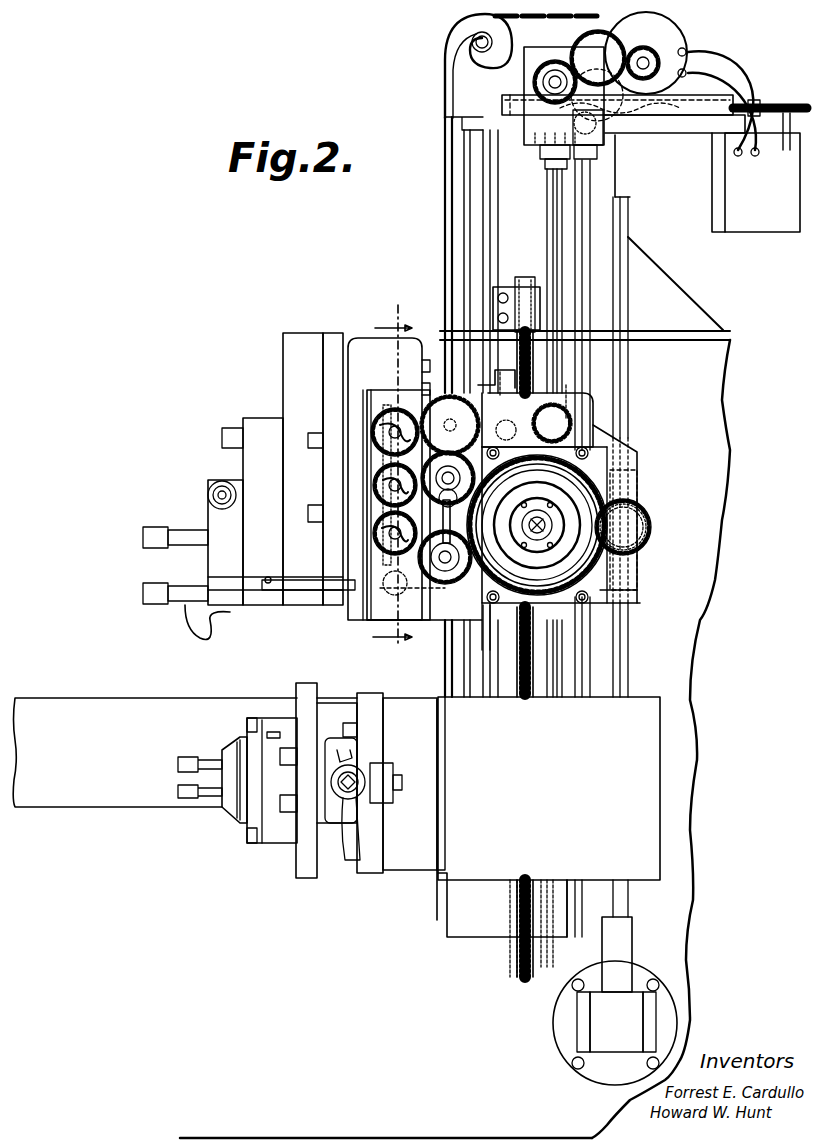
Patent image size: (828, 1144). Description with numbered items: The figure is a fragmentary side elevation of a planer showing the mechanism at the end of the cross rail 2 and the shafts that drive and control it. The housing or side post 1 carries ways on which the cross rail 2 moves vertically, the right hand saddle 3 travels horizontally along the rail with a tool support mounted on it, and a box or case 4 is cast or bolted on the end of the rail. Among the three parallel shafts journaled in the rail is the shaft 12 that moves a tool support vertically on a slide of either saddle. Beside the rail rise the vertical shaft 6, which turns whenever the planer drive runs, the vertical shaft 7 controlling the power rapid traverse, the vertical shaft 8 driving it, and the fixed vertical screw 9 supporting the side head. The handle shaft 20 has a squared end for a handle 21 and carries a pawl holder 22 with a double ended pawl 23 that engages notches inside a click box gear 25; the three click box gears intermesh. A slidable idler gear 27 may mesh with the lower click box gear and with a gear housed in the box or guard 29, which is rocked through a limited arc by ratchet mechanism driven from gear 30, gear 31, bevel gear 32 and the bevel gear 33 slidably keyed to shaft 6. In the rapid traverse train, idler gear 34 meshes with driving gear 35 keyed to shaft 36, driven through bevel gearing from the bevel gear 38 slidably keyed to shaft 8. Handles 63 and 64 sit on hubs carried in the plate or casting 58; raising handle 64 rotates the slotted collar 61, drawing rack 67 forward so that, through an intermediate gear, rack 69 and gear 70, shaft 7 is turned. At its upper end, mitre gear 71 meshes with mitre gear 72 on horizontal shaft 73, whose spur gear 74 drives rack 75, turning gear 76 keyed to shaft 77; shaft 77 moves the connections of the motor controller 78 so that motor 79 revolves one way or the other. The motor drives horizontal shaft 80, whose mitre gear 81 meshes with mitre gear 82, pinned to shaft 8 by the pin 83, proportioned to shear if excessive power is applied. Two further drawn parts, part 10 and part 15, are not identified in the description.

The housing or side post 1 is at (455, 576).
The cross rail 2 is at (229, 759).
The right hand saddle 3 is at (319, 476).
The box or case 4 is at (426, 395).
The vertical shaft 6 is at (628, 413).
The vertical shaft 7 is at (590, 300).
The vertical shaft 8 is at (547, 186).
The vertical fixed screw 9 is at (545, 358).
The base housing 10 is at (645, 695).
The shaft 12 is at (370, 485).
The bracket 15 is at (500, 615).
The handle shaft 20 is at (426, 427).
The handle 21 is at (372, 532).
The pawl holder 22 is at (395, 405).
The double ended pawl 23 is at (440, 396).
The click box gear 25 is at (460, 448).
The idler gear 27 is at (445, 585).
The box or guard 29 is at (640, 575).
The gear 30 is at (588, 485).
The gear 31 is at (650, 490).
The bevel gear 32 is at (652, 527).
The bevel gear 33 is at (640, 470).
The idler gear 34 is at (496, 372).
The driving gear 35 is at (568, 395).
The shaft 36 is at (532, 422).
The bevel gear 38 is at (590, 400).
The plate or casting 58 is at (367, 612).
The slotted collar 61 is at (389, 593).
The handle 63 is at (268, 580).
The handle 64 is at (305, 578).
The rack 67 is at (430, 590).
The rack 69 is at (537, 531).
The gear 70 is at (637, 595).
The mitre gear 71 is at (600, 138).
The mitre gear 72 is at (620, 108).
The horizontal shaft 73 is at (612, 127).
The spur gear 74 is at (635, 63).
The rack 75 is at (618, 95).
The gear 76 is at (785, 103).
The shaft 77 is at (782, 140).
The motor controller 78 is at (762, 182).
The motor 79 is at (688, 45).
The horizontal shaft 80 is at (598, 58).
The mitre gear 81 is at (533, 80).
The mitre gear 82 is at (527, 108).
The pin 83 is at (540, 158).